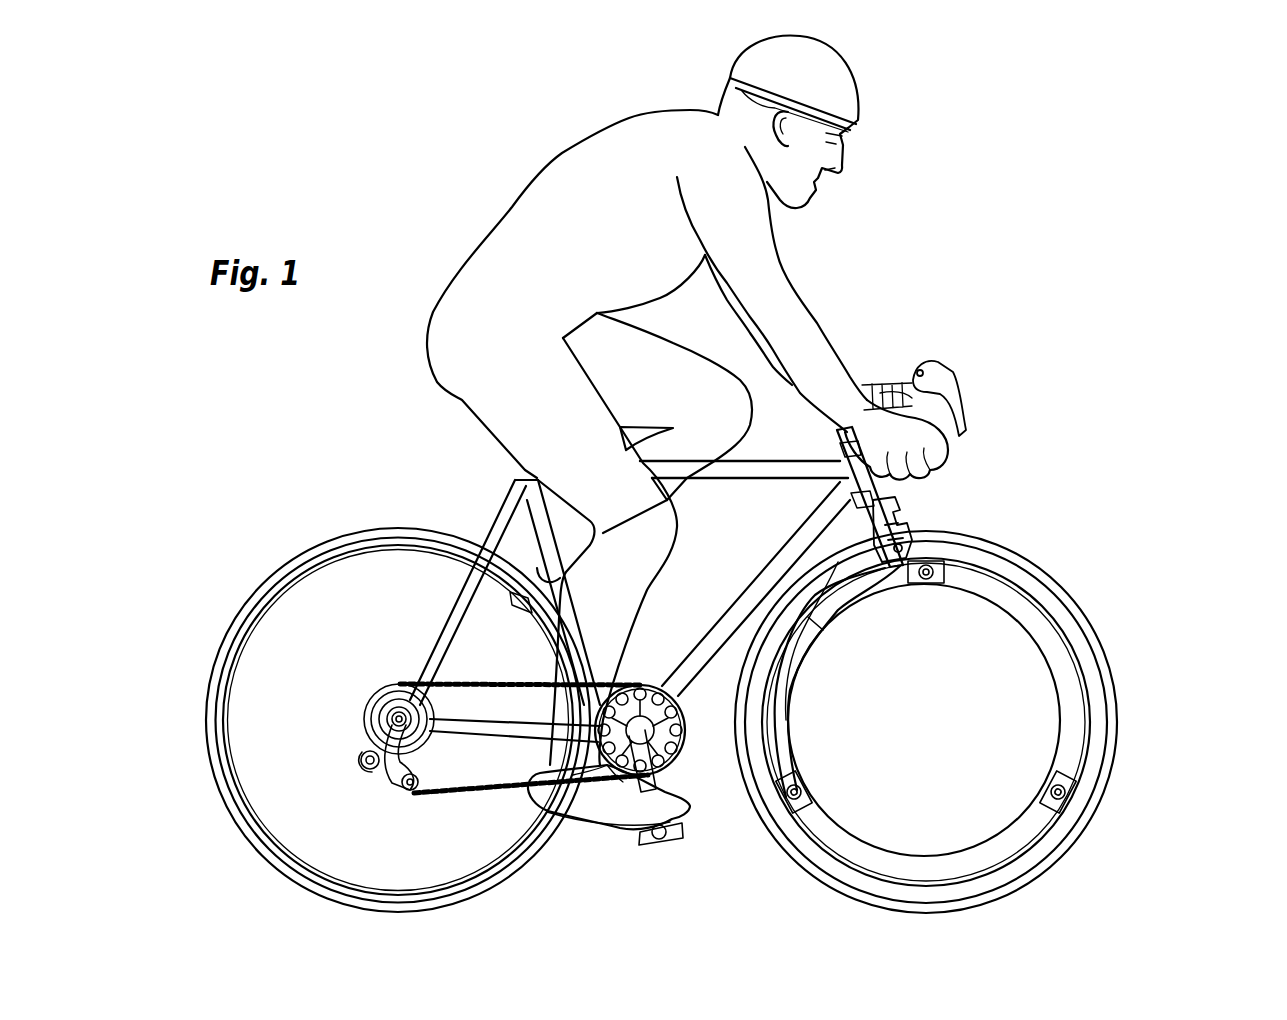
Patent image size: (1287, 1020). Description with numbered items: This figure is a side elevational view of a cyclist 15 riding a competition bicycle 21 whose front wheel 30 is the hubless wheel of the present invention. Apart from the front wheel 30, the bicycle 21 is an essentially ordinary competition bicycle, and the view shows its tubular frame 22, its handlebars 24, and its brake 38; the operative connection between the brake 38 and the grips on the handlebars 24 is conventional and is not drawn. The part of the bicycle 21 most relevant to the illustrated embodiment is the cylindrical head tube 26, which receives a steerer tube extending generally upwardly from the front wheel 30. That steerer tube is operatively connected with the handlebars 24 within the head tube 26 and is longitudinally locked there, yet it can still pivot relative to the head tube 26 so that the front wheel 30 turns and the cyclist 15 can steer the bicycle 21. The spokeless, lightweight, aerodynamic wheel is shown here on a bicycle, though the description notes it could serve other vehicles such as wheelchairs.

The cyclist 15 is at (506, 188).
The bicycle 21 is at (480, 501).
The tubular frame 22 is at (742, 468).
The handlebars 24 is at (880, 390).
The head tube 26 is at (873, 487).
The brake 38 is at (897, 517).
The front wheel 30 is at (1140, 668).